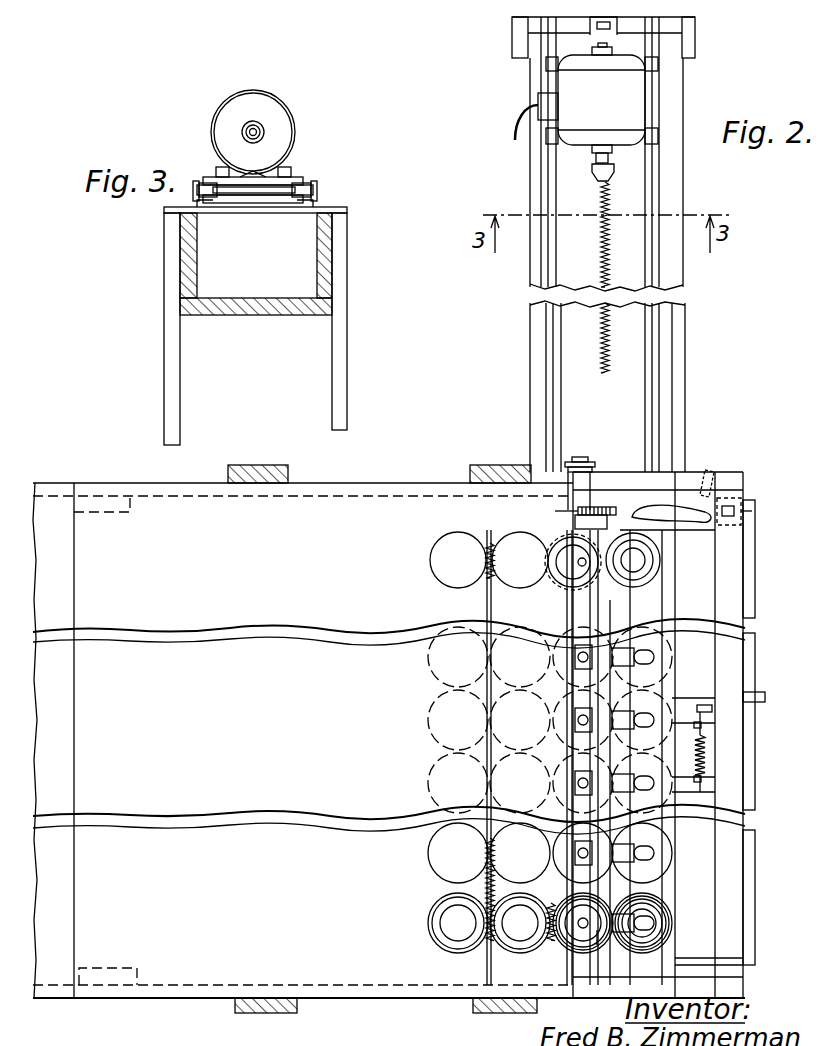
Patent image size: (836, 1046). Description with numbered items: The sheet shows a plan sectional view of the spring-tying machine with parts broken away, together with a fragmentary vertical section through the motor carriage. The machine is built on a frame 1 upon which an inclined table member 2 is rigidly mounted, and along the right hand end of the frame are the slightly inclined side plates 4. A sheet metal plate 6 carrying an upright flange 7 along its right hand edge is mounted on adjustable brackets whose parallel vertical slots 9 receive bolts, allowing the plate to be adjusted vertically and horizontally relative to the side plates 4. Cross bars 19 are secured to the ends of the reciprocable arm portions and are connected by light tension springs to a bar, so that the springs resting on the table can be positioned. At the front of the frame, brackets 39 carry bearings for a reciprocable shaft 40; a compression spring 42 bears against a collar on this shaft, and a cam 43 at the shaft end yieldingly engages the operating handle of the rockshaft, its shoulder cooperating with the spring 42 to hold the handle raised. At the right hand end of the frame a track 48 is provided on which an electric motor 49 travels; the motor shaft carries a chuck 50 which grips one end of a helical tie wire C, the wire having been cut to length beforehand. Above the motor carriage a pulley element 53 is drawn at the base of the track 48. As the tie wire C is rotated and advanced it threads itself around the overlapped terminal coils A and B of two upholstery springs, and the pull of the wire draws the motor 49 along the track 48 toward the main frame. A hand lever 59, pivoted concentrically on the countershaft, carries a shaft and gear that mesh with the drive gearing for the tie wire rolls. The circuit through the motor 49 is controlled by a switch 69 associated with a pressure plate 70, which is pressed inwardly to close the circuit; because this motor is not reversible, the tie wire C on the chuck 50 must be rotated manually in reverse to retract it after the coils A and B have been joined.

In FIG. 2, the frame 1 is at (196, 1027).
In FIG. 2, the table member 2 is at (342, 968).
In FIG. 2, the side plates 4 is at (734, 686).
In FIG. 2, the sheet metal plate 6 is at (660, 889).
In FIG. 2, the upright flange 7 is at (676, 871).
In FIG. 2, the vertical slots 9 is at (697, 543).
In FIG. 2, the cross bars 19 is at (543, 733).
In FIG. 2, the brackets 39 is at (765, 697).
In FIG. 2, the reciprocable shaft 40 is at (704, 717).
In FIG. 2, the compression spring 42 is at (706, 756).
In FIG. 2, the cam 43 is at (703, 705).
In FIG. 3, the track 48 is at (200, 203).
In FIG. 2, the track 48 is at (547, 336).
In FIG. 3, the electric motor 49 is at (283, 123).
In FIG. 2, the electric motor 49 is at (622, 115).
In FIG. 3, the chuck 50 is at (265, 133).
In FIG. 2, the chuck 50 is at (612, 172).
In FIG. 2, the pulley 53 is at (586, 460).
In FIG. 2, the hand lever 59 is at (700, 492).
In FIG. 2, the switch 69 is at (742, 500).
In FIG. 2, the pressure plate 70 is at (746, 649).
In FIG. 2, the terminal coil A is at (668, 930).
In FIG. 2, the terminal coil B is at (598, 942).
In FIG. 2, the helical tie wire C is at (602, 236).